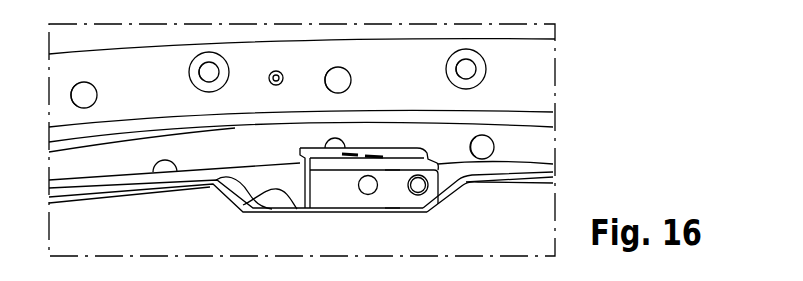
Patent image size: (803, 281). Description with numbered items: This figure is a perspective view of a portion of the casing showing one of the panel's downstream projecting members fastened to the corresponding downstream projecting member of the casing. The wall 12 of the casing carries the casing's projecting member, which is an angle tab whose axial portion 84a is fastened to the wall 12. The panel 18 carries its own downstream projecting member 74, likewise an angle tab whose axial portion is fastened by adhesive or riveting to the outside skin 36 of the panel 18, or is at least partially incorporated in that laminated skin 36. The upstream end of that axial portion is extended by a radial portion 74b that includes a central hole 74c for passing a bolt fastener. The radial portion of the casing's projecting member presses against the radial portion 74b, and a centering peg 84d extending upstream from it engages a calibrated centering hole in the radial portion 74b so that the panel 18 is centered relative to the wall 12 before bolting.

The wall 12 is at (574, 83).
The panel 18 is at (528, 207).
The outside skin 36 is at (247, 206).
The downstream projecting member 74 is at (380, 171).
The radial portion 74b is at (393, 193).
The central hole 74c is at (368, 188).
The axial portion 84a is at (382, 148).
The centering peg 84d is at (418, 186).